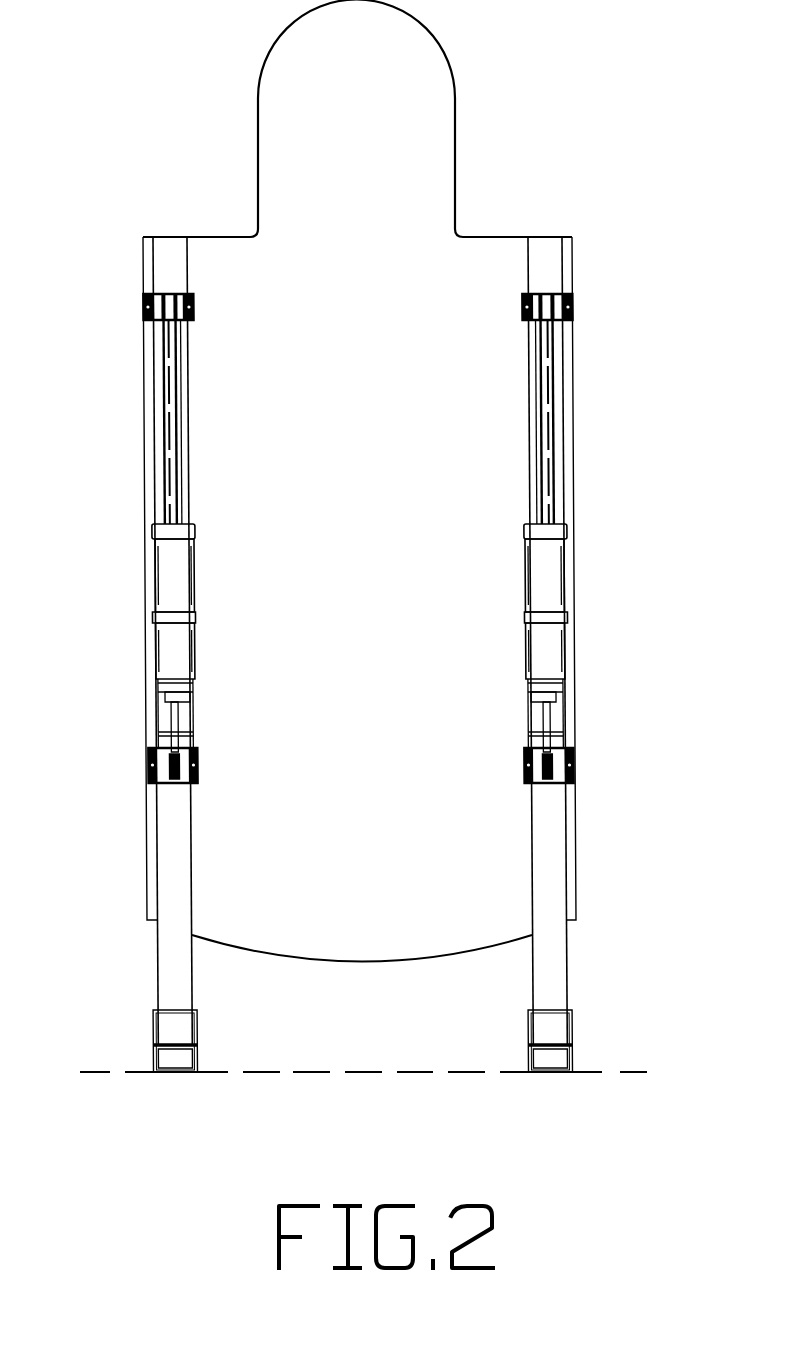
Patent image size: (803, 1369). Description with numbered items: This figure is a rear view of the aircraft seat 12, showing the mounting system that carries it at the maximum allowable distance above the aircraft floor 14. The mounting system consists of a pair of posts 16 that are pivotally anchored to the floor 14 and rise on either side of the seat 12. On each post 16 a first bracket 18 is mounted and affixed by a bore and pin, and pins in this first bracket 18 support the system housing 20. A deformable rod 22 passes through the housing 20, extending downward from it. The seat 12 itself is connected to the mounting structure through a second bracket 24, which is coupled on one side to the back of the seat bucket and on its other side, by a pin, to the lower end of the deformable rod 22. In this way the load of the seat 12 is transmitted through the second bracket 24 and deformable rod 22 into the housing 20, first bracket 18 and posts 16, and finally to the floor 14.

The seat 12 is at (145, 135).
The aircraft floor 14 is at (615, 1073).
The post 16 is at (162, 949).
The first bracket 18 is at (150, 706).
The system housing 20 is at (148, 635).
The deformable rod 22 is at (172, 735).
The second bracket 24 is at (140, 786).